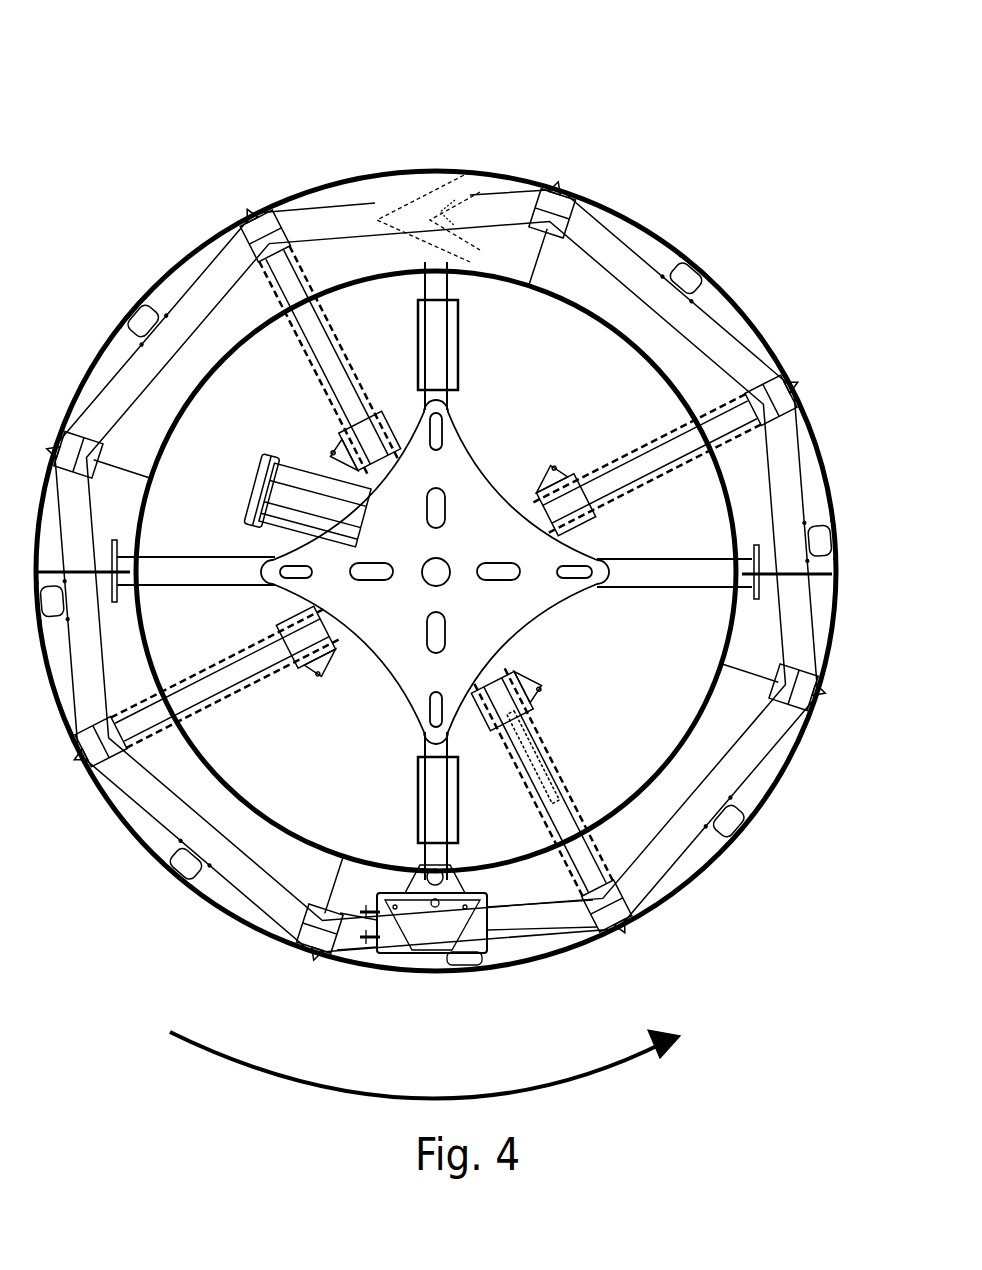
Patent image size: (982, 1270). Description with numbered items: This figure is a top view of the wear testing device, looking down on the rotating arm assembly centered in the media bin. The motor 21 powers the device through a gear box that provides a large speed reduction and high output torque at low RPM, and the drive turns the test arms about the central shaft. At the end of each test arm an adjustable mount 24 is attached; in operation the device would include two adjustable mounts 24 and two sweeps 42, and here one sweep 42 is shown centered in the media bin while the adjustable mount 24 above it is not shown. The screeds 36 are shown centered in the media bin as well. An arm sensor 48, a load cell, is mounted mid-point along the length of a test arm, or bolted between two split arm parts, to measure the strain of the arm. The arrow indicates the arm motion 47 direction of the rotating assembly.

The motor 21 is at (298, 483).
The adjustable mount 24 is at (466, 923).
The screeds 36 is at (90, 562).
The sweep 42 is at (445, 183).
The arm motion 47 is at (397, 1043).
The arm sensor 48 is at (472, 351).